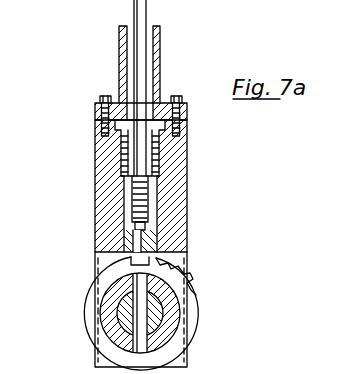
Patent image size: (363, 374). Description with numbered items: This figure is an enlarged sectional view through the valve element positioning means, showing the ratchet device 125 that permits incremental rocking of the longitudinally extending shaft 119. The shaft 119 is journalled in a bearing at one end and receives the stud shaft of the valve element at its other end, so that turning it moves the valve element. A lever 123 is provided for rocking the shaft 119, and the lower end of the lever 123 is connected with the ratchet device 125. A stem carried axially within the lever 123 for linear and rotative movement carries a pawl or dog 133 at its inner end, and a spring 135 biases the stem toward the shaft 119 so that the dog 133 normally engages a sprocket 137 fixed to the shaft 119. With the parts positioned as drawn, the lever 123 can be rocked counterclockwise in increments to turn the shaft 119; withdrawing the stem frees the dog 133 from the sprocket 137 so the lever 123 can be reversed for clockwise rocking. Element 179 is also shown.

The shaft 119 is at (153, 313).
The lever 123 is at (162, 62).
The ratchet device 125 is at (80, 318).
The pawl or dog 133 is at (142, 238).
The spring 135 is at (187, 143).
The sprocket 137 is at (188, 277).
The rod 179 is at (147, 14).